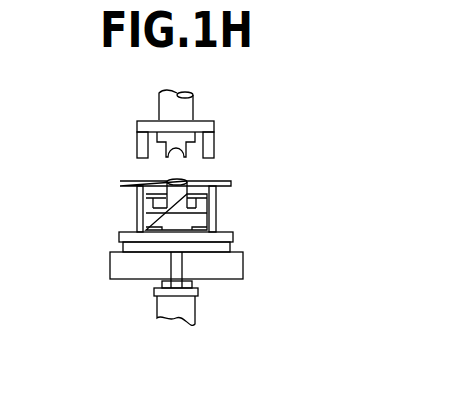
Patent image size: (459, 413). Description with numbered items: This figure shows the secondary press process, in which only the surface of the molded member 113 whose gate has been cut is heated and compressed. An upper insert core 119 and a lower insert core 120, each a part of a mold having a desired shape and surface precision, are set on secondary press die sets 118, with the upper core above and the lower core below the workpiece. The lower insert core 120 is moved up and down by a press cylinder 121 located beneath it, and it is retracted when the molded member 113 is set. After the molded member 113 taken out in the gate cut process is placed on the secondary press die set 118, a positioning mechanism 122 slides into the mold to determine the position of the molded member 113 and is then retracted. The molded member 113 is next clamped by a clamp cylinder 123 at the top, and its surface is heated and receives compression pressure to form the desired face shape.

The clamp cylinder 123 is at (187, 105).
The secondary press die set 118 is at (208, 128).
The upper insert core 119 is at (173, 145).
The molded member 113 is at (172, 180).
The positioning mechanism 122 is at (232, 183).
The lower insert core 120 is at (172, 208).
The press cylinder 121 is at (177, 267).